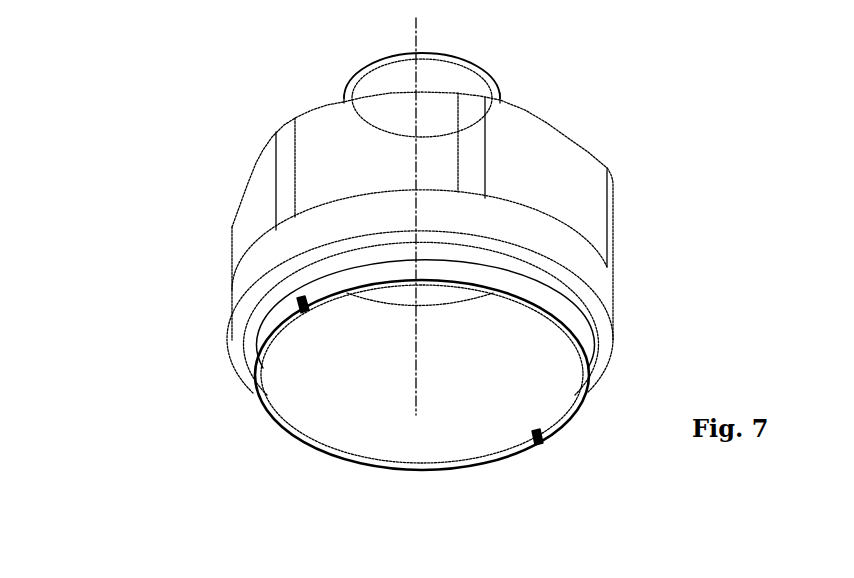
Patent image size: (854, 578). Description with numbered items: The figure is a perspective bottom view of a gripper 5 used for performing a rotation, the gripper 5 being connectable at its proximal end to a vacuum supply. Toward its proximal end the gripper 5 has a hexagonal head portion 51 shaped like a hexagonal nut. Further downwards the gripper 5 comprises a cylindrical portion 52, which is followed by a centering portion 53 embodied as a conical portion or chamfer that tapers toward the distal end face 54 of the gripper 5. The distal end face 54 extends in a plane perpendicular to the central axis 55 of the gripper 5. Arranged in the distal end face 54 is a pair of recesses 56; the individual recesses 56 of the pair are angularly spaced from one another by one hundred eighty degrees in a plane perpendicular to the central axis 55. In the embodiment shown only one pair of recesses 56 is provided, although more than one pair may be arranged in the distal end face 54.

The gripper 5 is at (188, 157).
The hexagonal head portion 51 is at (322, 158).
The cylindrical portion 52 is at (515, 268).
The centering portion 53 is at (272, 321).
The distal end face 54 is at (315, 452).
The central axis 55 is at (417, 330).
The recesses 56 is at (302, 312).